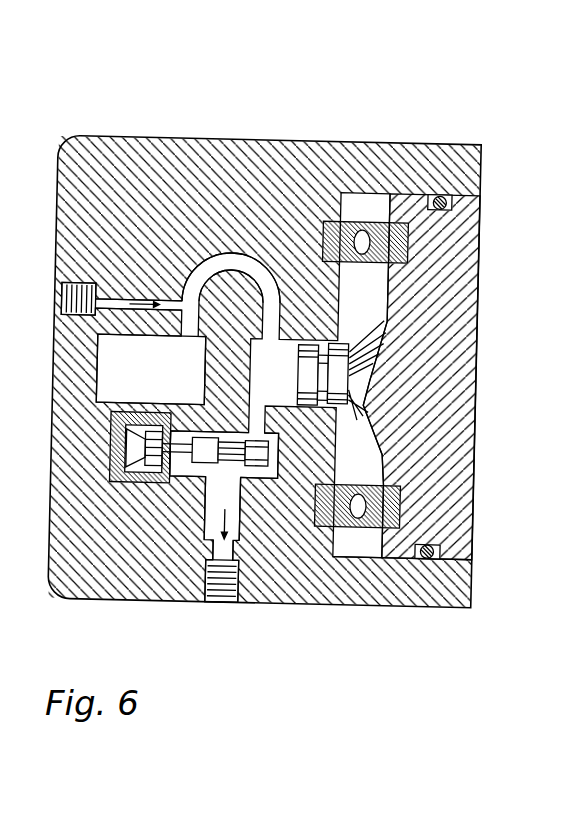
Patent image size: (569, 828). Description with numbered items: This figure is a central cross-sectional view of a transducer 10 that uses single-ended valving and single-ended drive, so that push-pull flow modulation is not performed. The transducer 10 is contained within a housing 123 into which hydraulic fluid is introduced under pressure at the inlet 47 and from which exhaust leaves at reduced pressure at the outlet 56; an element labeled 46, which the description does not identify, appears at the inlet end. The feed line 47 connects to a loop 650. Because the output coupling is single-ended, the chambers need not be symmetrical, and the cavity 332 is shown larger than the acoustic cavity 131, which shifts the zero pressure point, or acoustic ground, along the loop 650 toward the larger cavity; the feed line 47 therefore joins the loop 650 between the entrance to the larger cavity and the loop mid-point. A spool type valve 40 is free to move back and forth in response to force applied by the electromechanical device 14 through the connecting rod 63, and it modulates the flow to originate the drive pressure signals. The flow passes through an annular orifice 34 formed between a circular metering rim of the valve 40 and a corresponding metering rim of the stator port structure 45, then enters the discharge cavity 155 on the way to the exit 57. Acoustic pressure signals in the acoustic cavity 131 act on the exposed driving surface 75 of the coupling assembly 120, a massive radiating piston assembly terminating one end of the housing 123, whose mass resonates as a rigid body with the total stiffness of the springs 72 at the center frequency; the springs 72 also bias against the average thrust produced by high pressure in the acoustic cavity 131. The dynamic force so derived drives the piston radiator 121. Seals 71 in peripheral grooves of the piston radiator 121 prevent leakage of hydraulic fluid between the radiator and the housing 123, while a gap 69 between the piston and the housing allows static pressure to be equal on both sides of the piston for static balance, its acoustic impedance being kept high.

The transducer 10 is at (269, 348).
The housing 123 is at (276, 140).
The piston radiator 121 is at (470, 237).
The inlet fitting 46 is at (62, 300).
The inlet 47 is at (156, 303).
The loop 650 is at (240, 258).
The cavity 332 is at (168, 388).
The radiating piston assembly 120 is at (348, 333).
The acoustic cavity 131 is at (290, 362).
The exposed driving surface 75 is at (300, 388).
The springs 72 is at (363, 224).
The electromechanical device 14 is at (123, 483).
The connecting rod 63 is at (181, 466).
The spool type valve 40 is at (232, 440).
The annular orifice 34 is at (250, 438).
The stator port structure 45 is at (250, 478).
The discharge cavity 155 is at (238, 507).
The outlet 56 is at (219, 556).
The exit 57 is at (225, 602).
The gap 69 is at (385, 556).
The seals 71 is at (434, 553).